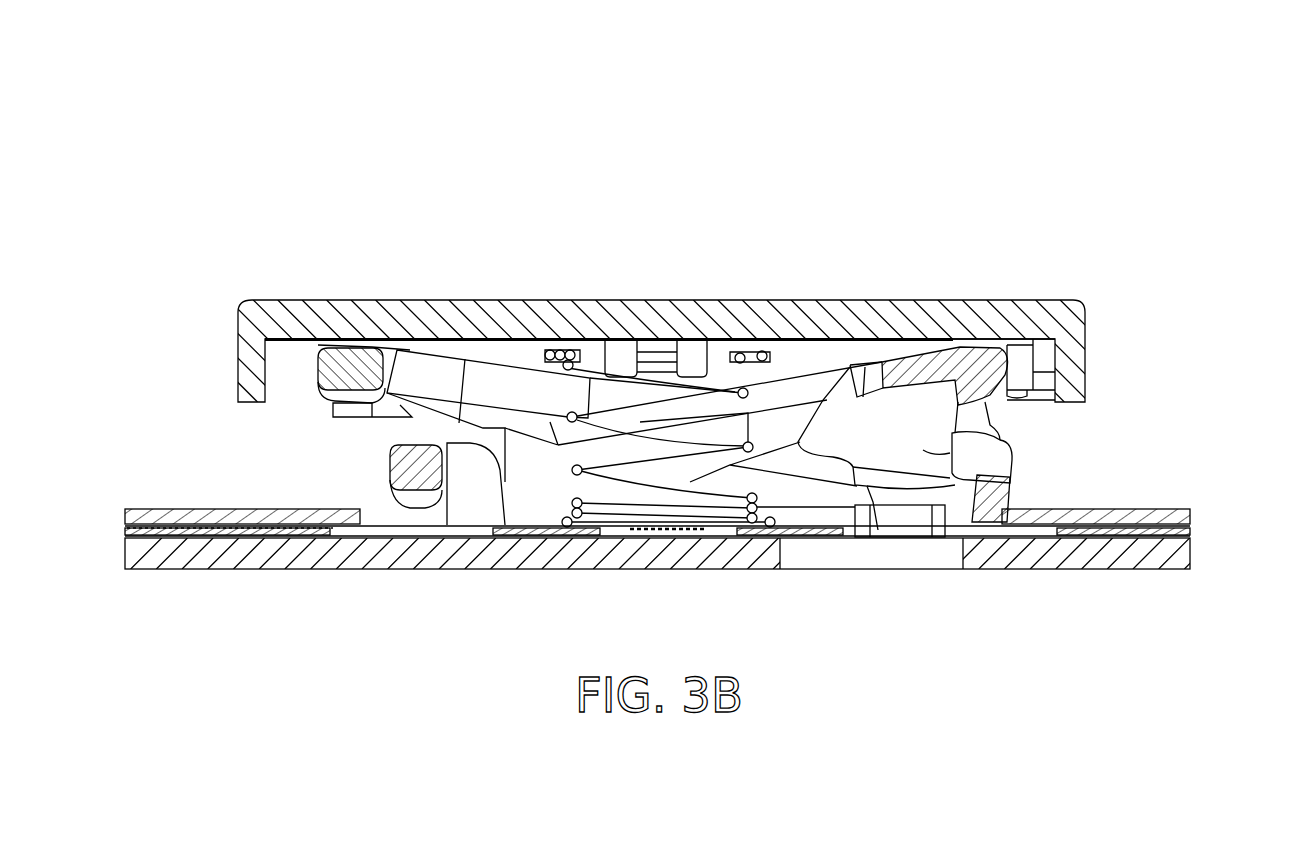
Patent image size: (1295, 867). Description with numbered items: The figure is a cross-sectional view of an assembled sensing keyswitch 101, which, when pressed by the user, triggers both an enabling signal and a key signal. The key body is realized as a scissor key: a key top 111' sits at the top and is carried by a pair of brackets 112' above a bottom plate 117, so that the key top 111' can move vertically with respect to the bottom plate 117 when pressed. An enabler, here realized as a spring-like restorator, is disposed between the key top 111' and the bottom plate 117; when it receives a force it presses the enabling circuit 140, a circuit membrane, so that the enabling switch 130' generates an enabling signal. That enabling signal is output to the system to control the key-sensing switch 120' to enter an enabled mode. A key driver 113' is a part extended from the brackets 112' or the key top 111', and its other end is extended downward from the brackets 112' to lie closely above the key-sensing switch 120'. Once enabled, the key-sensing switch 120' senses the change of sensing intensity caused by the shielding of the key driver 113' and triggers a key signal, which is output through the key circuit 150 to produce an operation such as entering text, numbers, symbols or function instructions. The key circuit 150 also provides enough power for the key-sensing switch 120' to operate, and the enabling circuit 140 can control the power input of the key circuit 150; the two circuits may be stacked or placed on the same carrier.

The sensing keyswitch 101 is at (1277, 78).
The key top 111' is at (659, 331).
The brackets 112' is at (700, 338).
The key driver 113' is at (745, 448).
The bottom plate 117 is at (1140, 512).
The key-sensing switch 120' is at (900, 565).
The enabling switch 130' is at (684, 586).
The enabling circuit 140 is at (508, 537).
The key circuit 150 is at (1108, 553).